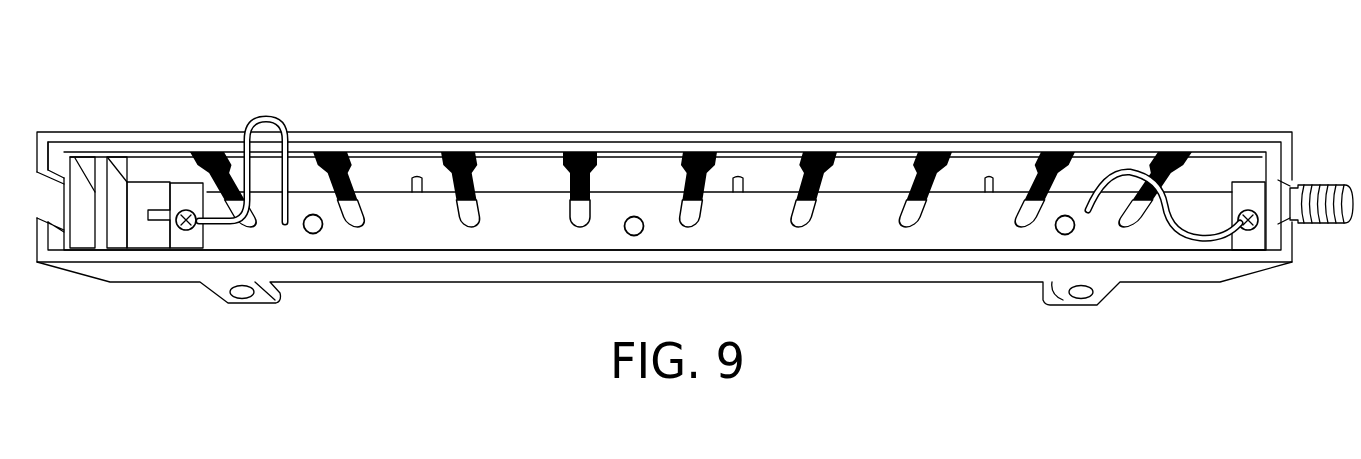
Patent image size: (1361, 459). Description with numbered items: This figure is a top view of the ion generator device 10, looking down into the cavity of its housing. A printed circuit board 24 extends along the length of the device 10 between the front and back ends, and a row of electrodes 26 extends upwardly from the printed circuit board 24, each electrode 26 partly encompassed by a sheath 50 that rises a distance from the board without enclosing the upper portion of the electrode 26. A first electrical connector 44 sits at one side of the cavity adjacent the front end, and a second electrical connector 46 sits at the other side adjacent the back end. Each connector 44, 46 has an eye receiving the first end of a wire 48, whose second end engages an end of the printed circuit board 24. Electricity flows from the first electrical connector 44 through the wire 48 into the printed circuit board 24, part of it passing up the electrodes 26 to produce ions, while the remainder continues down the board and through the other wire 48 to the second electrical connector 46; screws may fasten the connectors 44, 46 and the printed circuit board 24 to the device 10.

The ion generator device 10 is at (695, 172).
The printed circuit board 24 is at (888, 207).
The electrode 26 is at (353, 167).
The first electrical connector 44 is at (142, 200).
The second electrical connector 46 is at (1247, 190).
The wire 48 is at (282, 118).
The sheath 50 is at (477, 217).